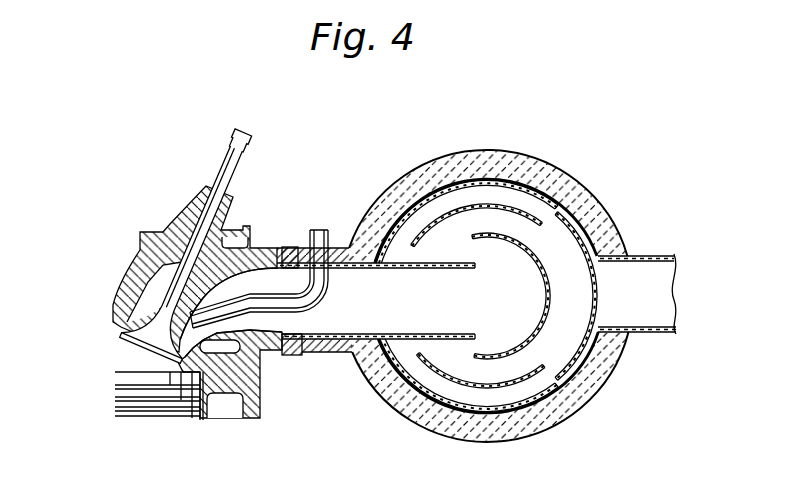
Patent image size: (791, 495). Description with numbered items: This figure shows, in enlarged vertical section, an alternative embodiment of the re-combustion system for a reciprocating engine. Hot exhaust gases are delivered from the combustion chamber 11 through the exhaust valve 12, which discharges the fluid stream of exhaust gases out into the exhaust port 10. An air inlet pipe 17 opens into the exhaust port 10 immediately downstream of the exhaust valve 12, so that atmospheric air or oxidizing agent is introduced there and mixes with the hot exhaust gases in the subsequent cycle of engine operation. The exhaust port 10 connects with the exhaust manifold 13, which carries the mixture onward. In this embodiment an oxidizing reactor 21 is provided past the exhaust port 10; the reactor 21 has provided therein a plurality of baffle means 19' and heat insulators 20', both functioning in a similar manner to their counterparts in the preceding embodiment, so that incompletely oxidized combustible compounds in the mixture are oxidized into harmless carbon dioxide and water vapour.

The exhaust port 10 is at (248, 282).
The combustion chamber 11 is at (128, 357).
The exhaust valve 12 is at (160, 290).
The exhaust manifold 13 is at (384, 375).
The air inlet pipe 17 is at (318, 232).
The baffle means 19' is at (495, 269).
The heat insulators 20' is at (487, 280).
The oxidizing reactor 21 is at (523, 150).